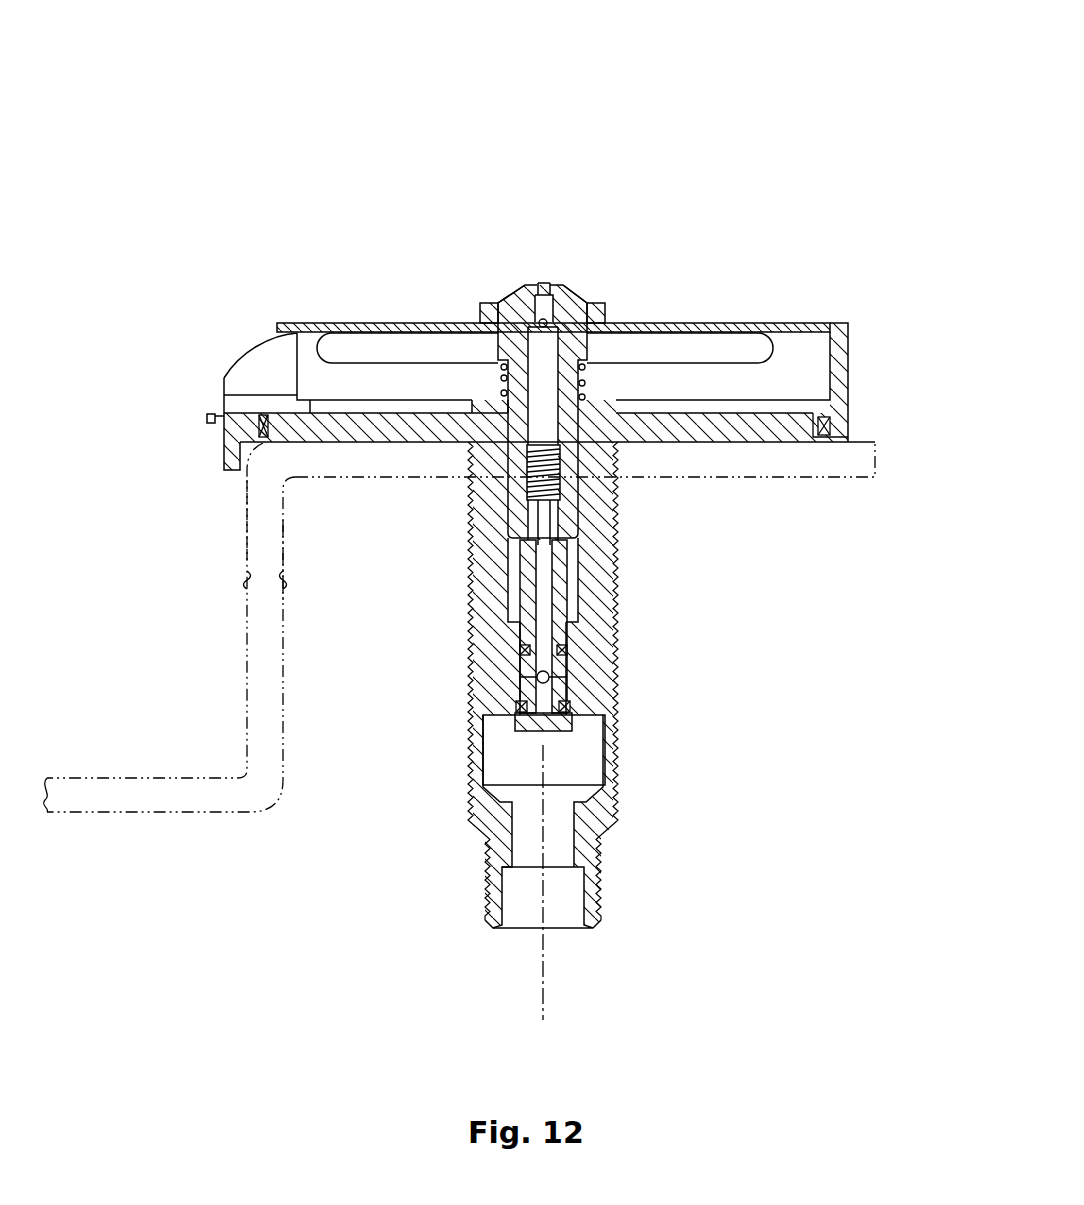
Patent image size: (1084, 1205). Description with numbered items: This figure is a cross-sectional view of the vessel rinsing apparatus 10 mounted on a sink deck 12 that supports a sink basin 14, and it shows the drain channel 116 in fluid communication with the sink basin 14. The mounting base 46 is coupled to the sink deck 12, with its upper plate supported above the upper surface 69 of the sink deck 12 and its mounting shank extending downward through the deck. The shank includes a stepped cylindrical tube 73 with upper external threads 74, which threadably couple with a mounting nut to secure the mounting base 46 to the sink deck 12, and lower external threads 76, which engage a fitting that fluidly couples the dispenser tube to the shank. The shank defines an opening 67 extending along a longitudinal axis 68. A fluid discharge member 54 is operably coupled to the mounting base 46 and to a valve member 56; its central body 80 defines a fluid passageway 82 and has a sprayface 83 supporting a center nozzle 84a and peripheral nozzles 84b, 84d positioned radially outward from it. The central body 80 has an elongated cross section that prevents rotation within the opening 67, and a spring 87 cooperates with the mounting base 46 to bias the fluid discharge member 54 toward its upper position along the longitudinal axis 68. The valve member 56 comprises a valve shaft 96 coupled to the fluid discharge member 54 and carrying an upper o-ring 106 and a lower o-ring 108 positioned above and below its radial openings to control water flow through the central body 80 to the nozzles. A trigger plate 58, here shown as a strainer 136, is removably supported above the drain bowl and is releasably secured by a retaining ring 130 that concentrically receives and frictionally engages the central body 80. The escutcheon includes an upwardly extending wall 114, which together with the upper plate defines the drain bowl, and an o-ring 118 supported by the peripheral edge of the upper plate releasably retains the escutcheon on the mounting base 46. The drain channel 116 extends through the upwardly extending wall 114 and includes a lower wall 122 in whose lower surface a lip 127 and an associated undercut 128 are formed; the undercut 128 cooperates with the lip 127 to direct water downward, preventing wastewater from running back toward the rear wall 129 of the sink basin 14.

The vessel rinsing apparatus 10 is at (759, 130).
The sink deck 12 is at (877, 440).
The sink basin 14 is at (247, 560).
The mounting base 46 is at (428, 606).
The fluid discharge member 54 is at (605, 250).
The valve member 56 is at (592, 611).
The trigger plate 58 is at (826, 300).
The opening 67 is at (592, 756).
The longitudinal axis 68 is at (547, 1002).
The upper surface 69 is at (862, 433).
The stepped cylindrical tube 73 is at (622, 697).
The upper external threads 74 is at (622, 578).
The lower external threads 76 is at (488, 907).
The central body 80 is at (572, 492).
The fluid passageway 82 is at (540, 418).
The sprayface 83 is at (537, 284).
The center nozzle 84a is at (548, 284).
The peripheral nozzle 84b is at (517, 300).
The peripheral nozzle 84d is at (588, 292).
The spring 87 is at (592, 386).
The valve shaft 96 is at (535, 576).
The upper o-ring 106 is at (520, 651).
The lower o-ring 108 is at (515, 702).
The upwardly extending wall 114 is at (840, 322).
The drain channel 116 is at (238, 346).
The o-ring 118 is at (824, 437).
The lower wall 122 is at (215, 412).
The lip 127 is at (210, 420).
The undercut 128 is at (238, 457).
The rear wall 129 is at (247, 515).
The retaining ring 130 is at (478, 312).
The strainer 136 is at (752, 318).